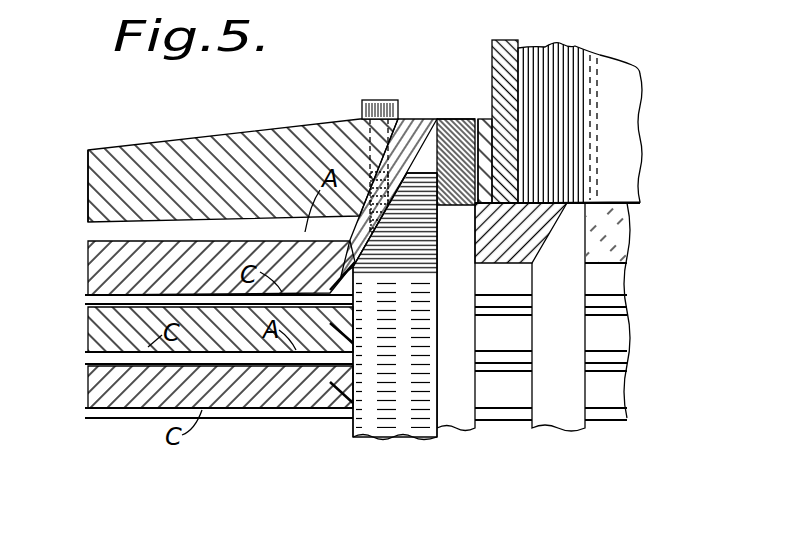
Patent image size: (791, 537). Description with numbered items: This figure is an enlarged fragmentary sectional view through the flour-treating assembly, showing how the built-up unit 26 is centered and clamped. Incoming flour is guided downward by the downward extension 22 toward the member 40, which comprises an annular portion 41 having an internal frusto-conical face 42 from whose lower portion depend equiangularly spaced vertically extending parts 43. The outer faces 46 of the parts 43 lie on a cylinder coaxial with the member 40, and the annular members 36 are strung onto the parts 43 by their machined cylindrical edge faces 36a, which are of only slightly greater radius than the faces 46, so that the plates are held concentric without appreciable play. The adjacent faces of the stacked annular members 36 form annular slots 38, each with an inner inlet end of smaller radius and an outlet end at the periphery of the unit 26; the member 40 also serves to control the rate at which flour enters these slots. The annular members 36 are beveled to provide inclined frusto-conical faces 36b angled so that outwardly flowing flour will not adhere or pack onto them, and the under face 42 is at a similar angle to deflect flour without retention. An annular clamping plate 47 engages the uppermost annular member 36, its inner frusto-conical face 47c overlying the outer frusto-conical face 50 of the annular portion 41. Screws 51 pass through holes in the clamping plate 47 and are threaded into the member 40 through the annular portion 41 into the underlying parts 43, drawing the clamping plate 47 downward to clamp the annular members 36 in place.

The downward extension 22 is at (625, 140).
The built-up unit 26 is at (160, 142).
The annular members 36 is at (92, 258).
The cylindrical edge face 36a is at (355, 318).
The inclined frusto-conical face 36b is at (342, 335).
The annular slots 38 is at (92, 303).
The member 40 is at (397, 440).
The annular portion 41 is at (445, 128).
The internal frusto-conical face 42 is at (466, 182).
The vertically extending parts 43 is at (427, 317).
The outer faces 46 is at (532, 330).
The annular clamping plate 47 is at (100, 173).
The inner frusto-conical face 47c is at (412, 116).
The outer frusto-conical face 50 is at (417, 143).
The screws 51 is at (364, 100).